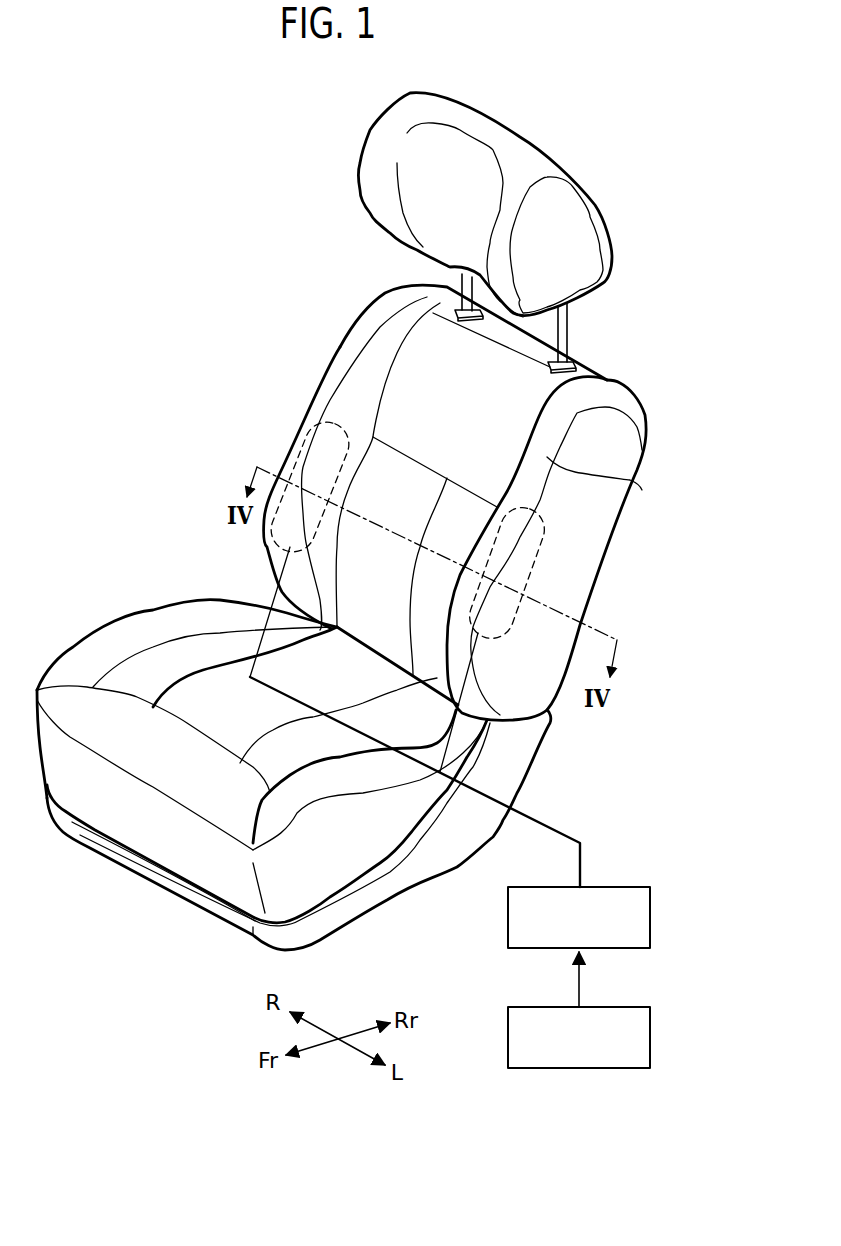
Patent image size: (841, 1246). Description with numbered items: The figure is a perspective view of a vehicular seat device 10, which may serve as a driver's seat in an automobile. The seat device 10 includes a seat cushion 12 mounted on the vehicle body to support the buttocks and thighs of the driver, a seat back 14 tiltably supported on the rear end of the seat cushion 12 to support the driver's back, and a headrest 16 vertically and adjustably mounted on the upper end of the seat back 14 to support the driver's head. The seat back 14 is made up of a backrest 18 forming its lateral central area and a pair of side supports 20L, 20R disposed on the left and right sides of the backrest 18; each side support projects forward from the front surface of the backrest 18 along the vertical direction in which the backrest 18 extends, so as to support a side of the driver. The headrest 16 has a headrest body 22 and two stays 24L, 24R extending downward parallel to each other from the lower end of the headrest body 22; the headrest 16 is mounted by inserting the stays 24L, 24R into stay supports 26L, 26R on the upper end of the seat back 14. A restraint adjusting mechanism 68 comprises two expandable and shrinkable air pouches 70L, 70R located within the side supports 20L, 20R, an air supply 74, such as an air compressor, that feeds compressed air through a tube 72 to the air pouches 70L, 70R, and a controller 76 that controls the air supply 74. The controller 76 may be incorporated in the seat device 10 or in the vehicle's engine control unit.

The seat device 10 is at (608, 76).
The seat cushion 12 is at (400, 783).
The seat back 14 is at (622, 381).
The headrest 16 is at (523, 132).
The backrest 18 is at (397, 483).
The right side support 20R is at (353, 413).
The left side support 20L is at (635, 483).
The headrest body 22 is at (380, 193).
The right stay 24R is at (460, 280).
The left stay 24L is at (566, 338).
The right stay support 26R is at (460, 316).
The left stay support 26L is at (552, 370).
The restraint adjusting mechanism 68 is at (616, 868).
The right air pouch 70R is at (285, 547).
The left air pouch 70L is at (598, 563).
The tube 72 is at (552, 823).
The air supply 74 is at (652, 918).
The controller 76 is at (652, 1038).